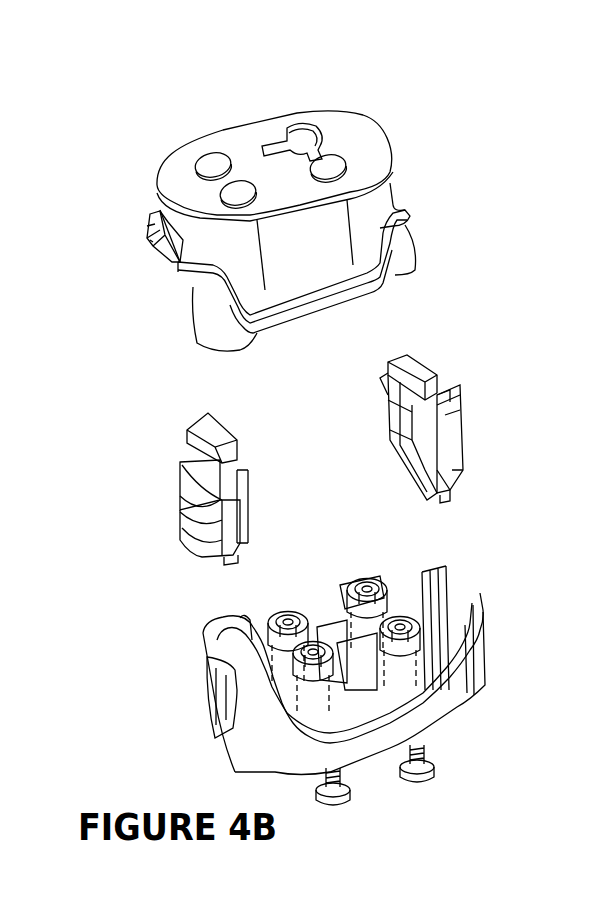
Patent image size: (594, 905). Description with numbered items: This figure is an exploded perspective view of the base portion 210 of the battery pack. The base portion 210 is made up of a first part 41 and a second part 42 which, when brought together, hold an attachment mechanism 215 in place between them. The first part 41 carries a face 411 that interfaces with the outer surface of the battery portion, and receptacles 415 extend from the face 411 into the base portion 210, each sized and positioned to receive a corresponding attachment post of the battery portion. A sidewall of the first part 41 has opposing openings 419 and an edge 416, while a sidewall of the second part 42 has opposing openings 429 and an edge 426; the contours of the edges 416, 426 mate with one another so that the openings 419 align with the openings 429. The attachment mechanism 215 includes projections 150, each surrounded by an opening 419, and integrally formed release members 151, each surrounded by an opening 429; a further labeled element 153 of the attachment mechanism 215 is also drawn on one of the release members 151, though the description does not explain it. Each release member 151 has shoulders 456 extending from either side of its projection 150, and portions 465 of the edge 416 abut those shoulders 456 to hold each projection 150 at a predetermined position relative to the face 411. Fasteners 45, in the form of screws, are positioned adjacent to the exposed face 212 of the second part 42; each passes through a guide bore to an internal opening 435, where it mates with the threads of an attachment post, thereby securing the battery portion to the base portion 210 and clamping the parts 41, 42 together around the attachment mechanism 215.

The base portion 210 is at (292, 269).
The first part 41 is at (271, 269).
The face 411 is at (244, 150).
The receptacles 415 is at (235, 195).
The opposing openings 419 is at (158, 267).
The portions of edge 465 is at (157, 245).
The edge 416 is at (253, 340).
The attachment mechanism 215 is at (346, 443).
The projection 150 is at (326, 443).
The shoulders 456 is at (240, 472).
The contact beam 153 is at (407, 440).
The release member 151 is at (193, 533).
The second part 42 is at (327, 665).
The face 212 is at (343, 684).
The edge 426 is at (212, 630).
The internal opening 435 is at (315, 650).
The opposing openings 429 is at (226, 713).
The fasteners 45 is at (346, 808).